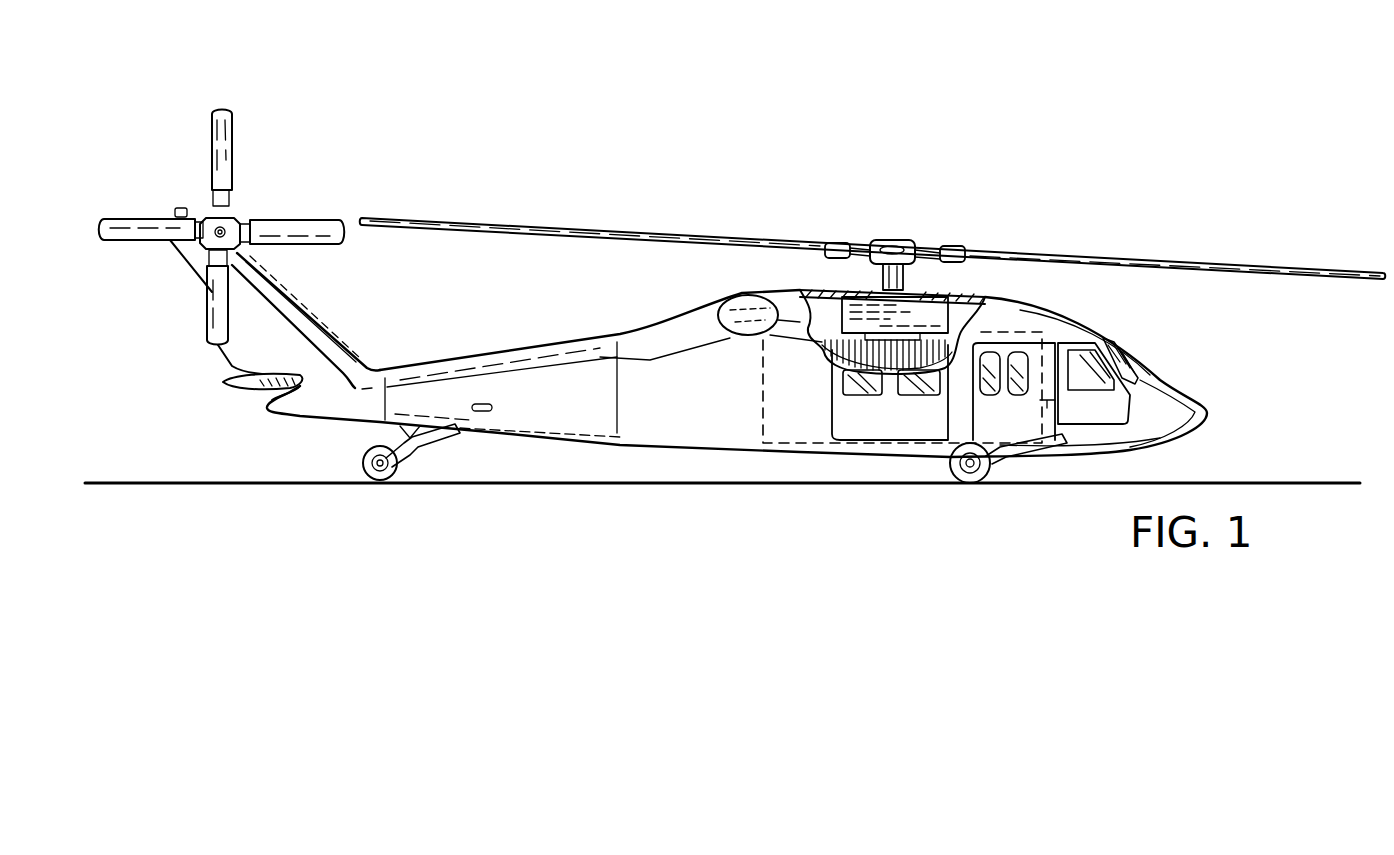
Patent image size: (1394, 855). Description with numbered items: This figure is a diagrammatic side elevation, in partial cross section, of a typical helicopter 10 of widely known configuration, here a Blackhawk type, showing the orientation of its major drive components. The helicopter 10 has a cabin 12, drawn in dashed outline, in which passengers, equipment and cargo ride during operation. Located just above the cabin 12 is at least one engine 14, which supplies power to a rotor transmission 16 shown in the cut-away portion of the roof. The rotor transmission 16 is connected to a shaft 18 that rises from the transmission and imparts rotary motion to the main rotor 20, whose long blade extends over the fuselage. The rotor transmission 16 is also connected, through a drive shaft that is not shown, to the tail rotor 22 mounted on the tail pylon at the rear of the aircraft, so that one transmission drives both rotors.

The helicopter 10 is at (688, 361).
The cabin 12 is at (768, 410).
The engine 14 is at (777, 300).
The rotor transmission 16 is at (925, 325).
The shaft 18 is at (872, 280).
The main rotor 20 is at (995, 250).
The tail rotor 22 is at (238, 139).